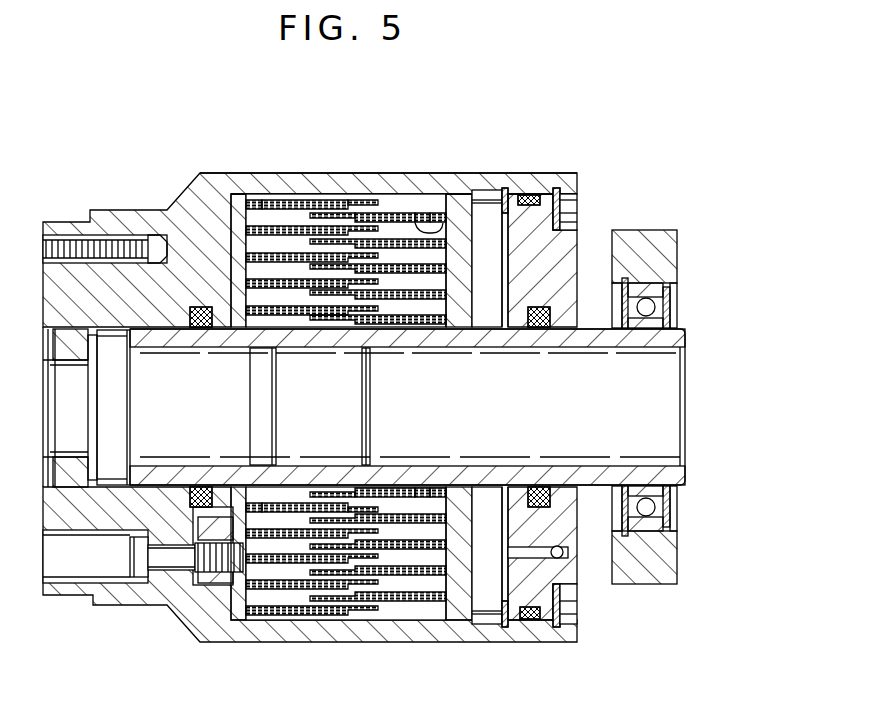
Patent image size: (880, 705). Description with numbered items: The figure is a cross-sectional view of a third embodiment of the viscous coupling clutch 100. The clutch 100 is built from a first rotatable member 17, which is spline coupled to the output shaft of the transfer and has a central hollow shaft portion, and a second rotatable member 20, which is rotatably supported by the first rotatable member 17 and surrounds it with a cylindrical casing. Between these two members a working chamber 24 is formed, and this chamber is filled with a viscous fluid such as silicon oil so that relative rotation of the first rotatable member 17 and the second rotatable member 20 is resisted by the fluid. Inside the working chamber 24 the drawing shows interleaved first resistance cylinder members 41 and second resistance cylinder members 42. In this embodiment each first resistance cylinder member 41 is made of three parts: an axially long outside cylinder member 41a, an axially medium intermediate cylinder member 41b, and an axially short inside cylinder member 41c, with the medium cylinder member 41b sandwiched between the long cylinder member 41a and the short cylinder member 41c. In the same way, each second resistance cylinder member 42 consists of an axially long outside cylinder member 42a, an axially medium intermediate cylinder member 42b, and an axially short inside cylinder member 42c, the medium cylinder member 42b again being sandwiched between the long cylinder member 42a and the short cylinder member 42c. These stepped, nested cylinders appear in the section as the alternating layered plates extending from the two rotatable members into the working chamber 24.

The viscous coupling clutch 100 is at (551, 158).
The second rotatable member 20 is at (423, 166).
The first rotatable member 17 is at (425, 349).
The working chamber 24 is at (404, 330).
The first resistance cylinder member 41 is at (397, 204).
The axially long cylinder member 41a is at (378, 213).
The axially medium cylinder member 41b is at (424, 225).
The axially short cylinder member 41c is at (462, 196).
The second resistance cylinder member 42 is at (311, 196).
The axially long cylinder member 42a is at (356, 203).
The axially medium cylinder member 42b is at (282, 198).
The axially short cylinder member 42c is at (250, 198).